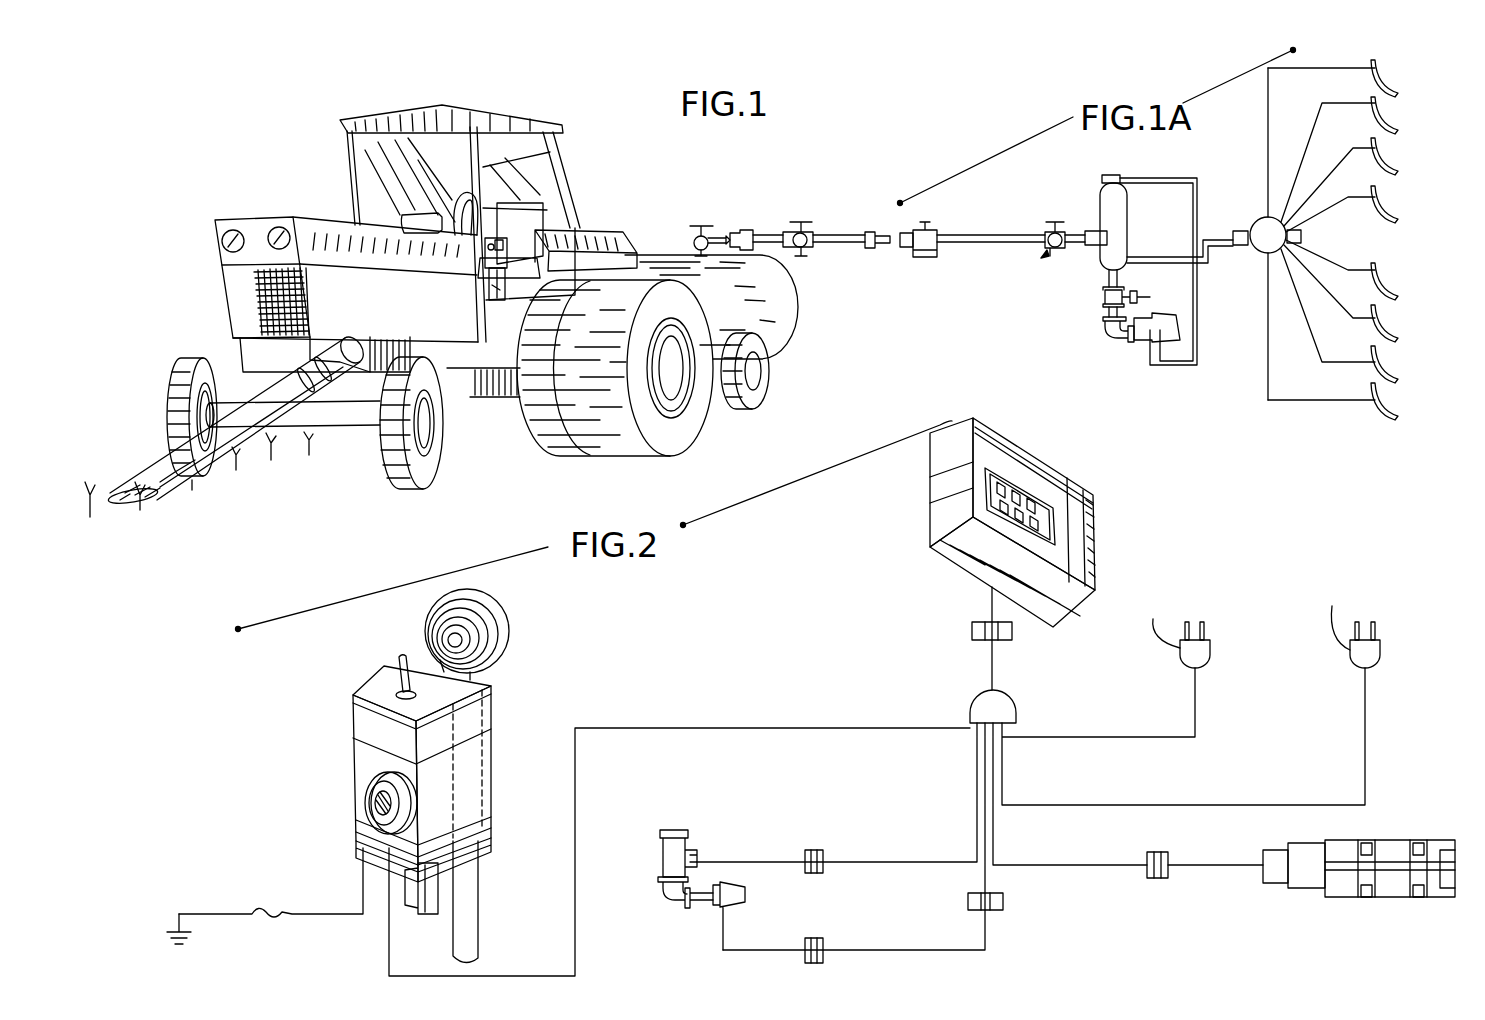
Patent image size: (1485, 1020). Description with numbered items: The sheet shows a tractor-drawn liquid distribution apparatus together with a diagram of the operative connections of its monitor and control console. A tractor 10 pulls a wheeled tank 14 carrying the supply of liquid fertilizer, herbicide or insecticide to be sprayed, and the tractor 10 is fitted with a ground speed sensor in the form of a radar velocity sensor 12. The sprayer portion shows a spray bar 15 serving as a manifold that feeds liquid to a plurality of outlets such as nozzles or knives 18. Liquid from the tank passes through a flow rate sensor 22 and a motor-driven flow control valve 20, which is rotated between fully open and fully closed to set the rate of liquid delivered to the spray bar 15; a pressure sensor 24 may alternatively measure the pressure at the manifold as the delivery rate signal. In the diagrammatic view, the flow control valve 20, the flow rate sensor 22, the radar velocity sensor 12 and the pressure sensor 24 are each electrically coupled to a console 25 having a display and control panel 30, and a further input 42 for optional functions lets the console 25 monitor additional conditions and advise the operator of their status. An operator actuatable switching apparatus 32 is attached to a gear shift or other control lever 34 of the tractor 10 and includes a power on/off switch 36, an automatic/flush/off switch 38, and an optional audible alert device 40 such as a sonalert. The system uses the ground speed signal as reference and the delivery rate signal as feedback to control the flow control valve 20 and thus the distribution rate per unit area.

In FIG. 1, the tractor 10 is at (262, 186).
In FIG. 1, the radar velocity sensor 12 is at (324, 383).
In FIG. 2, the radar velocity sensor 12 is at (1342, 882).
In FIG. 1, the wheeled tank 14 is at (787, 300).
In FIG. 1A, the spray bar 15 is at (1262, 218).
In FIG. 1A, the knives 18 is at (1393, 168).
In FIG. 1A, the flow control valve 20 is at (1152, 343).
In FIG. 2, the flow control valve 20 is at (663, 855).
In FIG. 1A, the flow rate sensor 22 is at (1103, 297).
In FIG. 2, the flow rate sensor 22 is at (712, 898).
In FIG. 2, the pressure sensor 24 is at (1380, 648).
In FIG. 2, the console 25 is at (950, 552).
In FIG. 2, the display and control panel 30 is at (1057, 500).
In FIG. 1, the switching apparatus 32 is at (479, 261).
In FIG. 2, the switching apparatus 32 is at (340, 729).
In FIG. 1, the control lever 34 is at (497, 297).
In FIG. 2, the control lever 34 is at (478, 885).
In FIG. 2, the power on/off switch 36 is at (425, 913).
In FIG. 2, the automatic/flush/off switch 38 is at (398, 660).
In FIG. 2, the audible alert device 40 is at (365, 783).
In FIG. 2, the further input 42 is at (1210, 648).